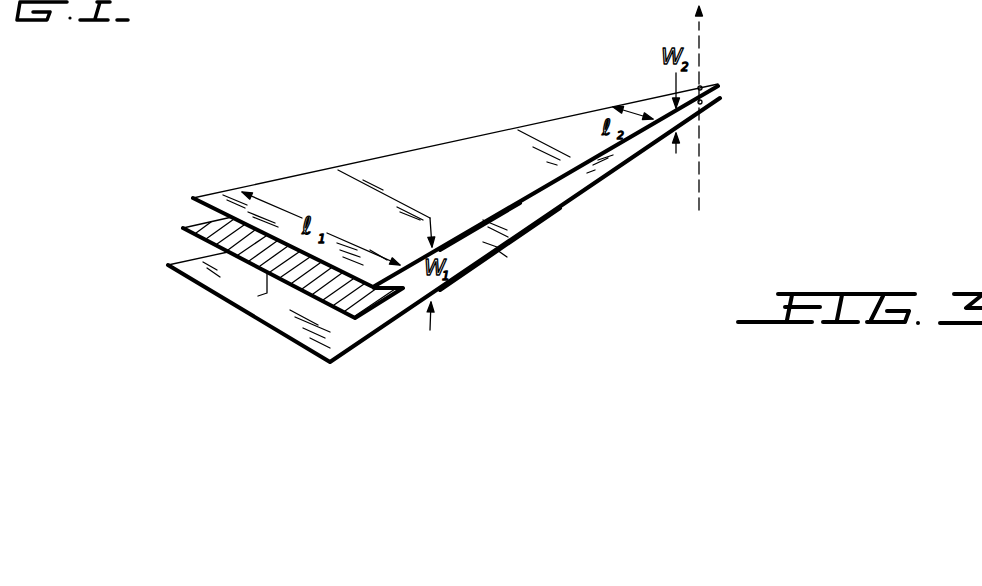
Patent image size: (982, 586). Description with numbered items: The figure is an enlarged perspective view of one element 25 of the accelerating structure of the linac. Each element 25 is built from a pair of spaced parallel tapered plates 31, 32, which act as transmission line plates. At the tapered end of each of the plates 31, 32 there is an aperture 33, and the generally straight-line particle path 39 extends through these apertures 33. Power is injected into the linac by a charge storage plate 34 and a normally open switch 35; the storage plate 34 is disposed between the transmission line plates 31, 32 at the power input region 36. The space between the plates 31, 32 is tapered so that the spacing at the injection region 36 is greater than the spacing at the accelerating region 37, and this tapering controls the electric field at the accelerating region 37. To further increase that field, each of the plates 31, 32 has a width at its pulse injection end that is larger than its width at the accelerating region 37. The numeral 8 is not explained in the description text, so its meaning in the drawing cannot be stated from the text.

The element 25 is at (405, 140).
The tapered plate 31 is at (477, 225).
The tapered plate 32 is at (500, 249).
The aperture 33 is at (703, 87).
The charge storage plate 34 is at (378, 308).
The normally open switch 35 is at (276, 293).
The power input region 36 is at (187, 291).
The accelerating region 37 is at (737, 90).
The particle path 39 is at (700, 161).
The gap between plates 8 is at (557, 193).